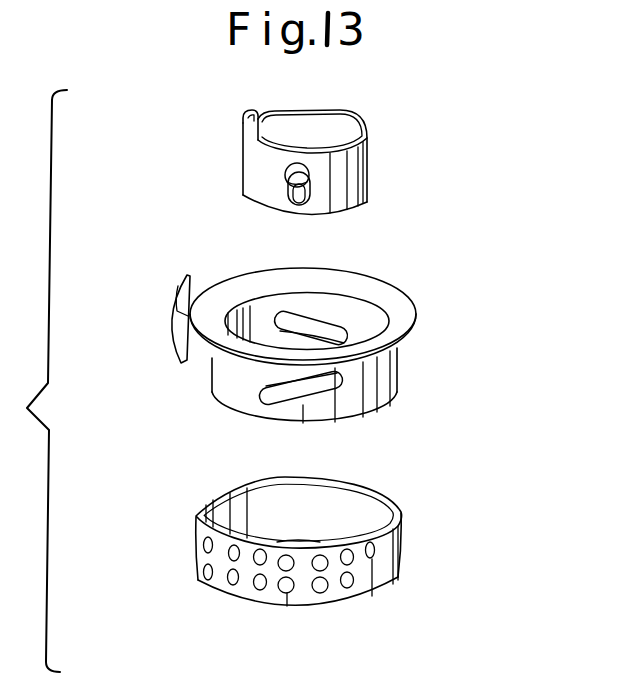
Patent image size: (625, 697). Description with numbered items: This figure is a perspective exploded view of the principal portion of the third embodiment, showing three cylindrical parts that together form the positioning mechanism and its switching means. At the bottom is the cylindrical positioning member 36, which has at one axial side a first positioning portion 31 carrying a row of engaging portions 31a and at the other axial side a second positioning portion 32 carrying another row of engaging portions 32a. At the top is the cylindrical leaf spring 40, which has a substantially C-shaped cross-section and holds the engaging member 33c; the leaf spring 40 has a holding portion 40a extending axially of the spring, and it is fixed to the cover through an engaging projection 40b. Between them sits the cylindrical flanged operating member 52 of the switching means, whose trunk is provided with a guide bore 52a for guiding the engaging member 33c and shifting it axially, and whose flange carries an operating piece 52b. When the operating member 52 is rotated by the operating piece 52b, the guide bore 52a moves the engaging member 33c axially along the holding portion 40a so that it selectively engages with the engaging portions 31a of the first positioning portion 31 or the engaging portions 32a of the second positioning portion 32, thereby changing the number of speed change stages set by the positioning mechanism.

The cylindrical leaf spring 40 is at (372, 160).
The engaging projection 40b is at (249, 118).
The engaging member 33c is at (293, 177).
The holding portion 40a is at (292, 197).
The cylindrical flanged operating member 52 is at (414, 310).
The operating piece 52b is at (175, 288).
The guide bore 52a is at (258, 410).
The second positioning portion 32 is at (222, 538).
The engaging portions 32a is at (228, 558).
The engaging portions 31a is at (230, 586).
The first positioning portion 31 is at (242, 592).
The cylindrical positioning member 36 is at (395, 549).